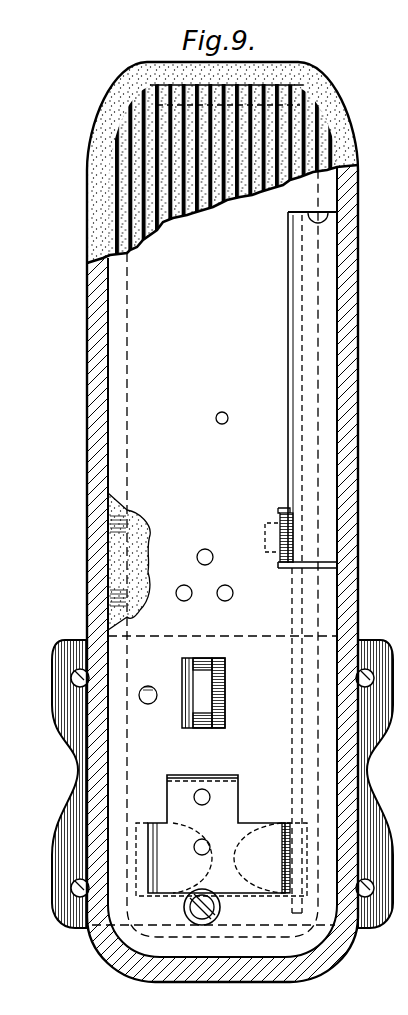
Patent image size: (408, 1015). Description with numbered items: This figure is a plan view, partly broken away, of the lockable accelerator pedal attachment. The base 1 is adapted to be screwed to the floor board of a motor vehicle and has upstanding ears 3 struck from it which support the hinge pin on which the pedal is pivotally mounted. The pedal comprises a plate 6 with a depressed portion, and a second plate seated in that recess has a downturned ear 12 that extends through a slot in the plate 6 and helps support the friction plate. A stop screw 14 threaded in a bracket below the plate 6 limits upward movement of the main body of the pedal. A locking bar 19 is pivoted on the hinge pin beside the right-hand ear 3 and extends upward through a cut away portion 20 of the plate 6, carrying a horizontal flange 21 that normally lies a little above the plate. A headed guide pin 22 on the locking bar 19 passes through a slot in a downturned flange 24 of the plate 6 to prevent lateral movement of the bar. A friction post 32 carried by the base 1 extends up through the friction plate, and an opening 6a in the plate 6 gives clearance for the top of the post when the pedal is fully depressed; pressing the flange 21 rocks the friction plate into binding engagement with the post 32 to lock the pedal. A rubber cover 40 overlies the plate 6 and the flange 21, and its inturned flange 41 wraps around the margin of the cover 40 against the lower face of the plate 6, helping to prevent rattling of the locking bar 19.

The base 1 is at (65, 708).
The upstanding ears 3 is at (140, 822).
The plate 6 is at (118, 420).
The opening 6a is at (186, 693).
The downturned ear 12 is at (206, 775).
The stop screw 14 is at (221, 905).
The locking bar 19 is at (295, 745).
The cut away portion 20 is at (343, 219).
The horizontal flange 21 is at (327, 278).
The headed guide pin 22 is at (265, 530).
The downturned flange 24 is at (280, 518).
The friction post 32 is at (197, 680).
The rubber cover 40 is at (107, 133).
The inturned flange 41 is at (115, 557).